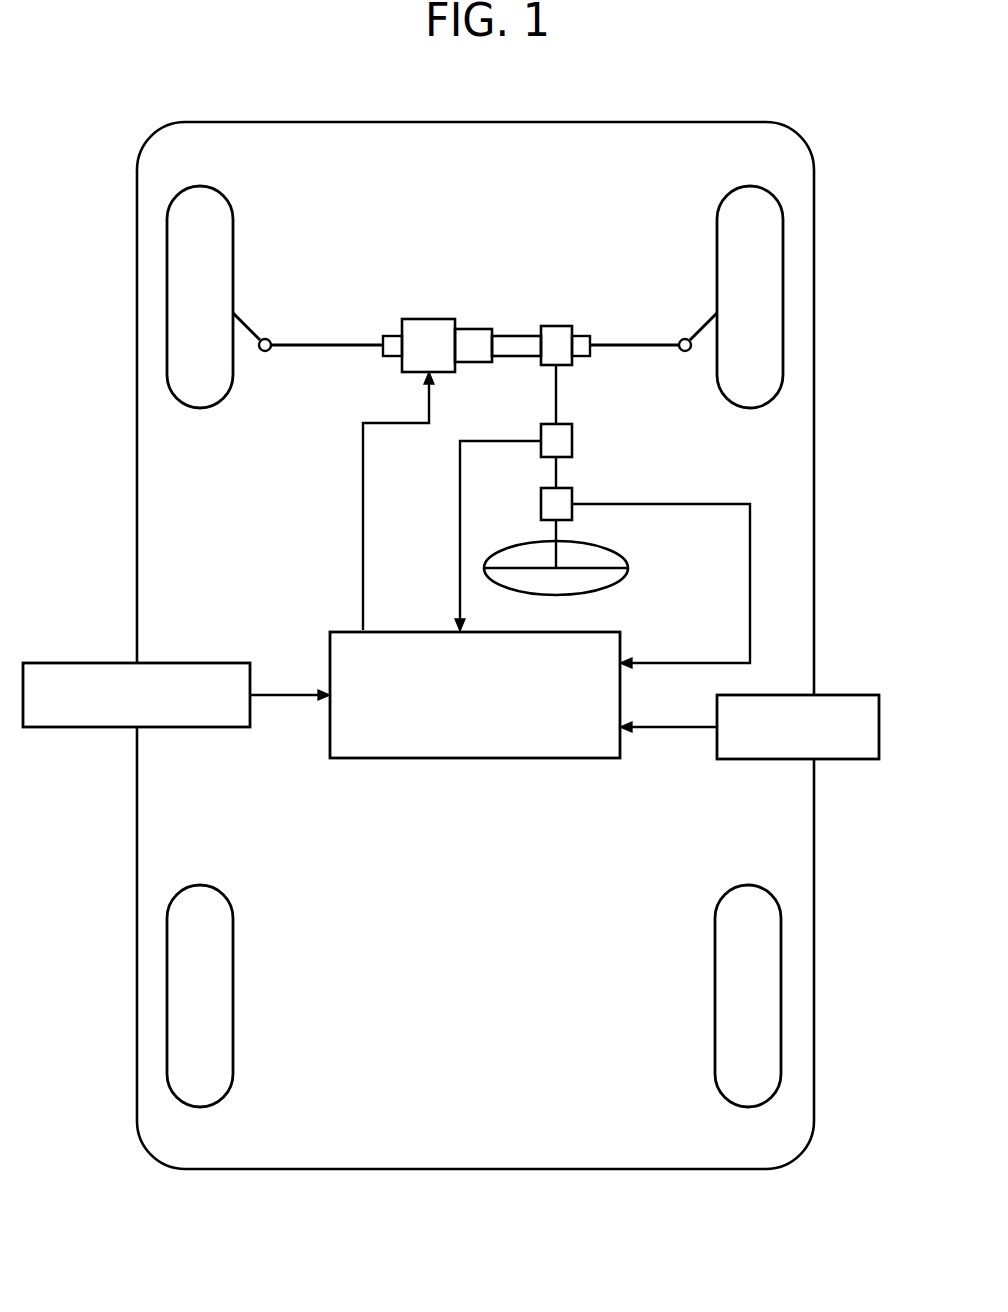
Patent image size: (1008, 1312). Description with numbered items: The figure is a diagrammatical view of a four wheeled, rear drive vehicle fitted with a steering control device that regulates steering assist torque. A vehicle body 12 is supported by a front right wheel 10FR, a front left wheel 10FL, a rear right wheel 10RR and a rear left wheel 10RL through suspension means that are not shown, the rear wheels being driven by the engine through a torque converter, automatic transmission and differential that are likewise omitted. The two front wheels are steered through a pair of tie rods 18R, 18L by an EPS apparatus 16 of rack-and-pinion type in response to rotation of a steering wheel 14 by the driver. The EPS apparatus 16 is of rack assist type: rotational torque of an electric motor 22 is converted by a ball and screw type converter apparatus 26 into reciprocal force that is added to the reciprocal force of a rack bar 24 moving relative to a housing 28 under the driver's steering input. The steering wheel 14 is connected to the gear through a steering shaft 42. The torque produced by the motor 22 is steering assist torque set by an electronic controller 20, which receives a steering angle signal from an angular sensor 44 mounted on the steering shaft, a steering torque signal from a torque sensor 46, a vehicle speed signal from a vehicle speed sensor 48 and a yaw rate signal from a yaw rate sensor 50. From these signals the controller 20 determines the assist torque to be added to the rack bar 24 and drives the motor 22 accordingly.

The front left wheel 10FL is at (167, 312).
The front right wheel 10FR is at (783, 312).
The rear left wheel 10RL is at (168, 1000).
The rear right wheel 10RR is at (781, 1002).
The vehicle body 12 is at (814, 600).
The steering wheel 14 is at (606, 546).
The EPS apparatus 16 is at (398, 298).
The tie rod 18L is at (251, 338).
The tie rod 18R is at (700, 330).
The electronic controller 20 is at (491, 739).
The electric motor 22 is at (429, 319).
The rack bar 24 is at (303, 350).
The ball and screw type converter apparatus 26 is at (474, 362).
The housing 28 is at (515, 334).
The steering shaft 42 is at (560, 388).
The angular sensor 44 is at (572, 441).
The torque sensor 46 is at (538, 506).
The vehicle speed sensor 48 is at (176, 663).
The yaw rate sensor 50 is at (775, 760).